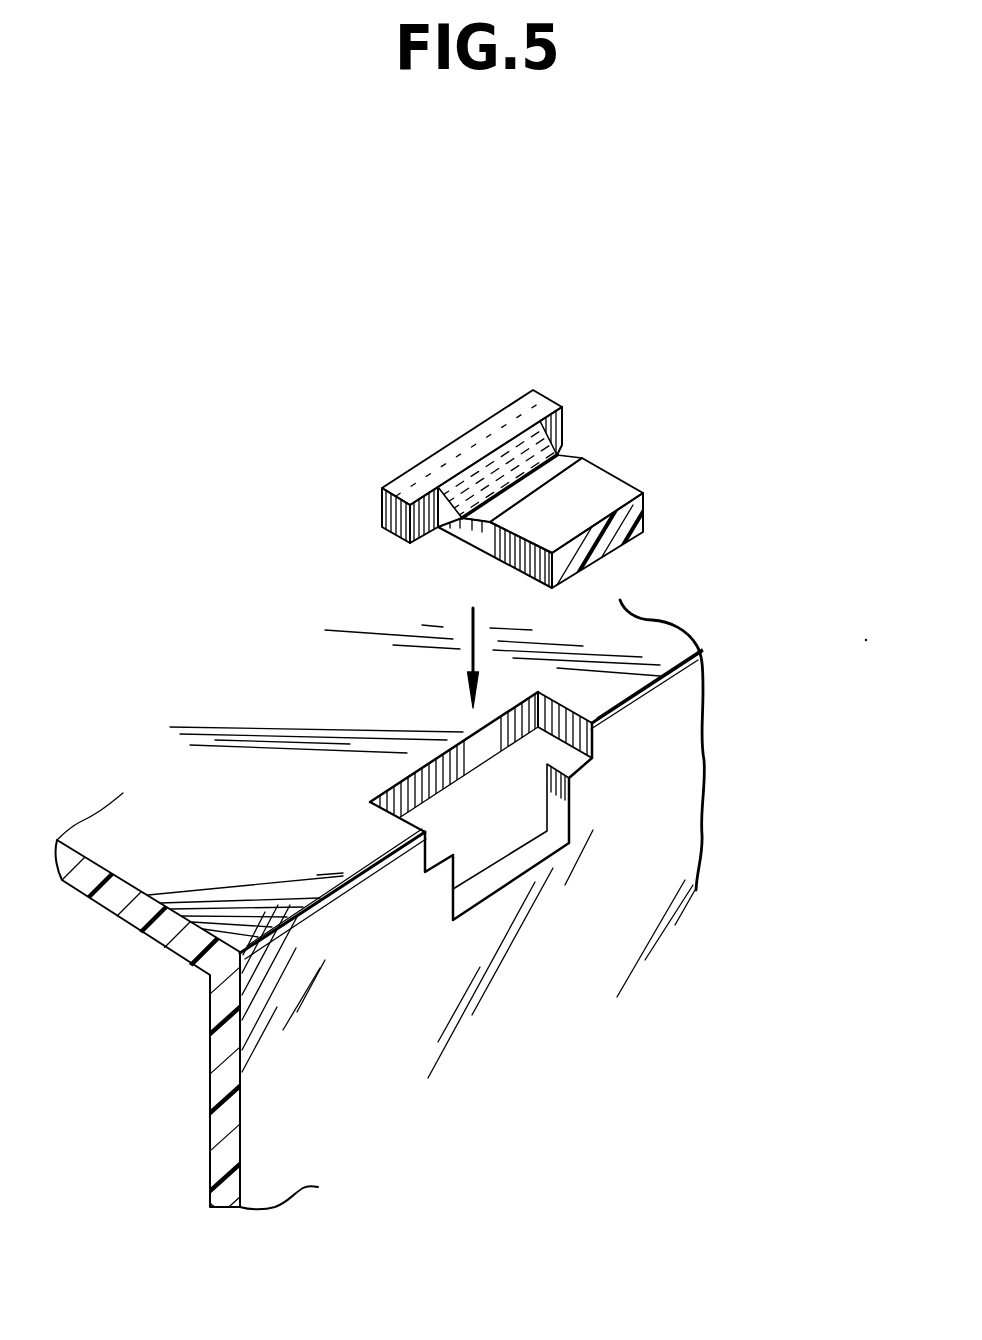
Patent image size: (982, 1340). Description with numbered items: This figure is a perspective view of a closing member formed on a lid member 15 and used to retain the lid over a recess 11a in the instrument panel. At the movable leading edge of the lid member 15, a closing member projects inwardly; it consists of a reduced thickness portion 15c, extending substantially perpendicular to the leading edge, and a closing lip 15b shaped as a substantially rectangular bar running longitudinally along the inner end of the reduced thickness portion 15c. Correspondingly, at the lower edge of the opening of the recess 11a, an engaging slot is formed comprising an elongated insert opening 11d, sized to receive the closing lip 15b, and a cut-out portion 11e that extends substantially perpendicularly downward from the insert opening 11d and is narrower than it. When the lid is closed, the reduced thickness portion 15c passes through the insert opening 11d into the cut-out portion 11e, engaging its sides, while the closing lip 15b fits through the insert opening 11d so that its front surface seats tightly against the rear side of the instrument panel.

The recess 11a is at (435, 886).
The insert opening 11d is at (537, 732).
The cut-out portion 11e is at (522, 815).
The lid member 15 is at (566, 479).
The closing lip 15b is at (543, 403).
The reduced thickness portion 15c is at (468, 524).